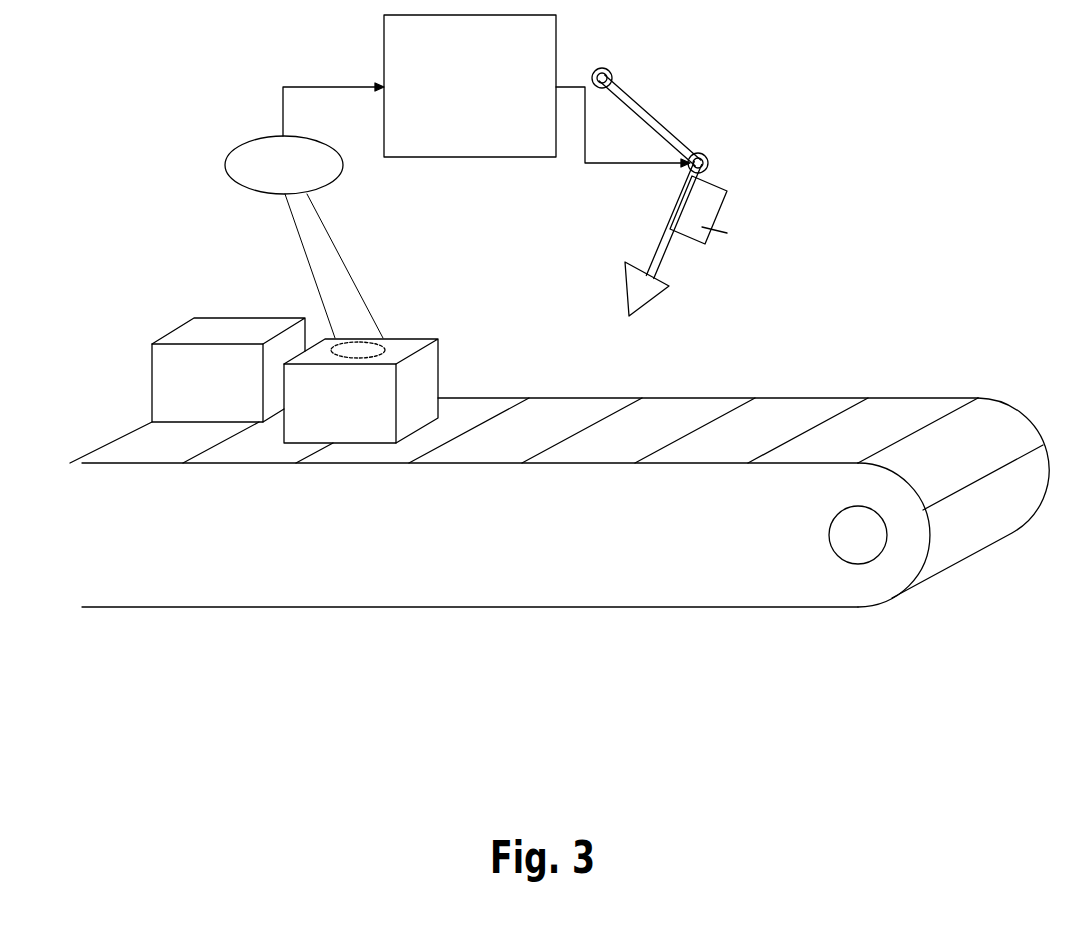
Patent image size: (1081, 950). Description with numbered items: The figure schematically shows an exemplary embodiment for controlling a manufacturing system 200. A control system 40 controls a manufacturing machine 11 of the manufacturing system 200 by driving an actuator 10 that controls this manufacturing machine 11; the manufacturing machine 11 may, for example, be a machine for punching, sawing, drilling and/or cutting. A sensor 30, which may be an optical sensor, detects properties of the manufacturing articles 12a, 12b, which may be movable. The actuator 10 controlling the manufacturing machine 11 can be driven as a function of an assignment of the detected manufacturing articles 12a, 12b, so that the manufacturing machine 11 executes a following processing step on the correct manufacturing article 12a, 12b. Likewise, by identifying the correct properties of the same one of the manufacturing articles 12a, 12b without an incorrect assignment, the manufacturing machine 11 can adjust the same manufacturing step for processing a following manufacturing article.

The control system 40 is at (372, 25).
The sensor 30 is at (225, 170).
The manufacturing machine 11 is at (670, 130).
The actuator 10 is at (725, 207).
The manufacturing article 12a is at (445, 370).
The manufacturing article 12b is at (170, 332).
The manufacturing system 200 is at (457, 608).